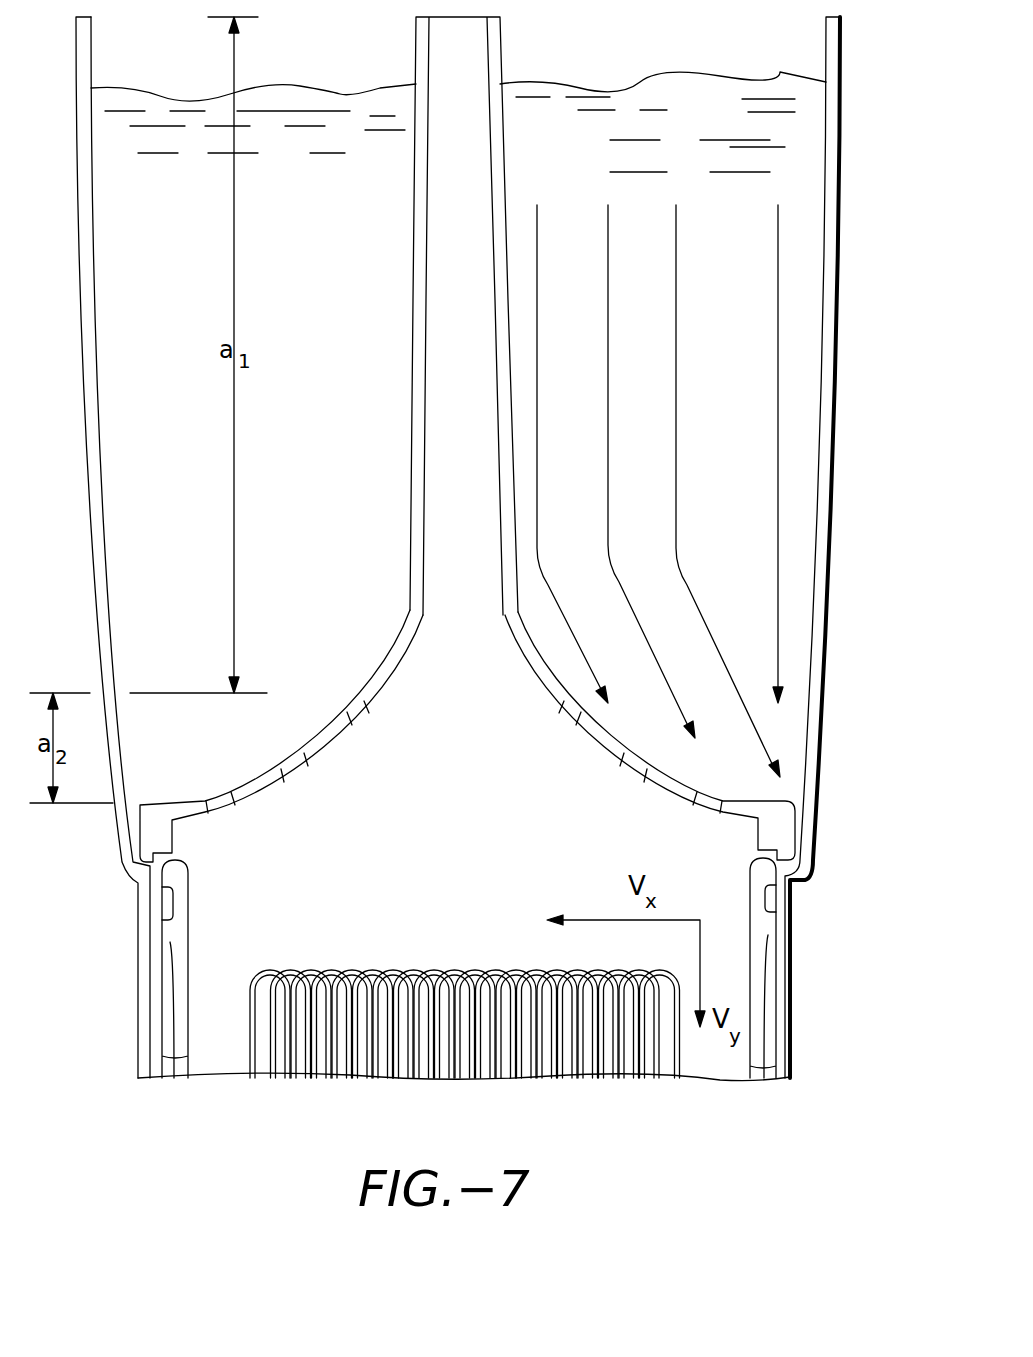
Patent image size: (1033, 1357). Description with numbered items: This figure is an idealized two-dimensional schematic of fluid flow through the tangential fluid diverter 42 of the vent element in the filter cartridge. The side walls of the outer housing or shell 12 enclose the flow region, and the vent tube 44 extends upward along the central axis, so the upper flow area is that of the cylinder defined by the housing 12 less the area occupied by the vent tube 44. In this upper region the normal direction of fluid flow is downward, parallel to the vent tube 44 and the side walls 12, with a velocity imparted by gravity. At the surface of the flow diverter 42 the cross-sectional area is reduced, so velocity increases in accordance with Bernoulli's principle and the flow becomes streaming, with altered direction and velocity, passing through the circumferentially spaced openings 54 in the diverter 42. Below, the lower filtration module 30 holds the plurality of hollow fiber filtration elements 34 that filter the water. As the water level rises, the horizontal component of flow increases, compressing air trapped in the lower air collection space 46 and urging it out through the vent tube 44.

The outer housing or shell 12 is at (841, 628).
The lower filtration module 30 is at (162, 1055).
The hollow fiber filtration elements 34 is at (342, 1045).
The tangential fluid diverter 42 is at (386, 665).
The vent tube 44 is at (416, 358).
The lower air collection space 46 is at (479, 711).
The openings 54 is at (570, 717).